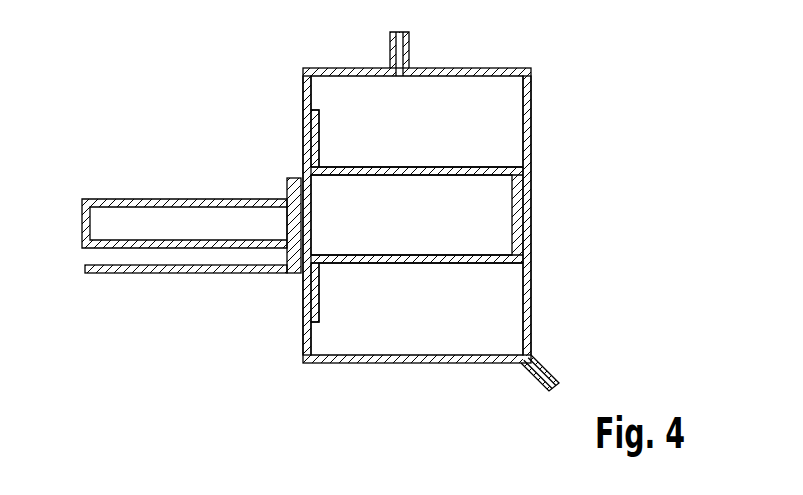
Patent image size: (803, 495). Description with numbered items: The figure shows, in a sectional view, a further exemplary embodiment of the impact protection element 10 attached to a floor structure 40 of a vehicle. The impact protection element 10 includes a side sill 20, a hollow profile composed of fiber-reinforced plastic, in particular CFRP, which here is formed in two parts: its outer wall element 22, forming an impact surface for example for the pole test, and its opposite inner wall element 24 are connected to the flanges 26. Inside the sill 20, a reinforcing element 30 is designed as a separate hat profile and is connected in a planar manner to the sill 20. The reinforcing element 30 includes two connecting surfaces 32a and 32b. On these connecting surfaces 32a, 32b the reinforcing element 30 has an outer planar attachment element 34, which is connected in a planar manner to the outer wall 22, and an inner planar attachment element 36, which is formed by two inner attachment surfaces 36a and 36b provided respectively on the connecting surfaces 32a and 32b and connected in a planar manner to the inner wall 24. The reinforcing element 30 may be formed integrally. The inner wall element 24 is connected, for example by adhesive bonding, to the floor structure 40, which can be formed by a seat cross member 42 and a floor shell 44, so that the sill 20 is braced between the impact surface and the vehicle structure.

The impact protection element 10 is at (568, 76).
The side sill 20 is at (500, 68).
The outer wall element 22 is at (532, 115).
The inner wall element 24 is at (303, 110).
The flanges 26 is at (390, 52).
The reinforcing element 30 is at (427, 153).
The connecting surface 32a is at (478, 166).
The connecting surface 32b is at (463, 268).
The outer planar attachment element 34 is at (523, 205).
The inner planar attachment element 36 is at (313, 177).
The inner attachment surface 36a is at (319, 137).
The inner attachment surface 36b is at (319, 284).
The floor structure 40 is at (100, 283).
The seat cross member 42 is at (140, 199).
The floor shell 44 is at (160, 274).